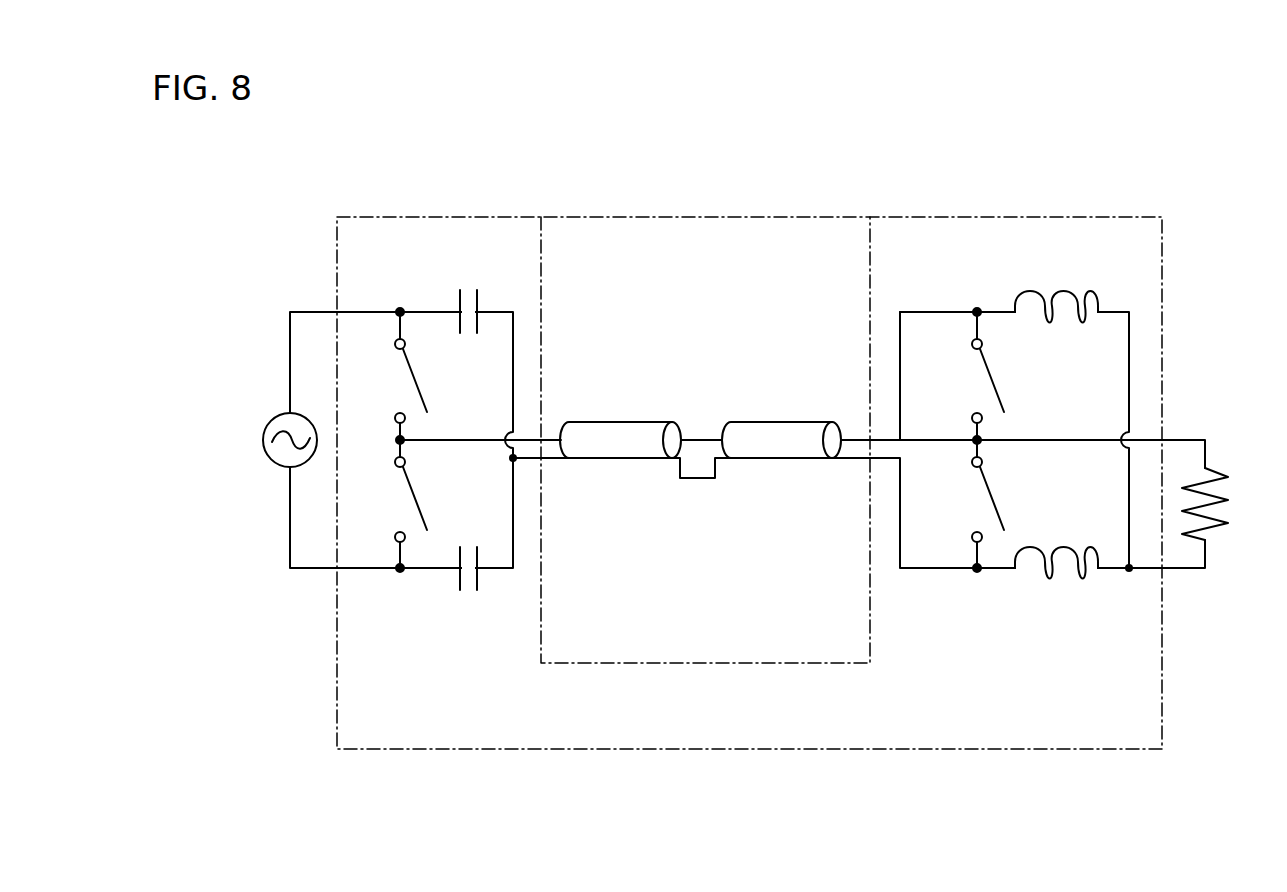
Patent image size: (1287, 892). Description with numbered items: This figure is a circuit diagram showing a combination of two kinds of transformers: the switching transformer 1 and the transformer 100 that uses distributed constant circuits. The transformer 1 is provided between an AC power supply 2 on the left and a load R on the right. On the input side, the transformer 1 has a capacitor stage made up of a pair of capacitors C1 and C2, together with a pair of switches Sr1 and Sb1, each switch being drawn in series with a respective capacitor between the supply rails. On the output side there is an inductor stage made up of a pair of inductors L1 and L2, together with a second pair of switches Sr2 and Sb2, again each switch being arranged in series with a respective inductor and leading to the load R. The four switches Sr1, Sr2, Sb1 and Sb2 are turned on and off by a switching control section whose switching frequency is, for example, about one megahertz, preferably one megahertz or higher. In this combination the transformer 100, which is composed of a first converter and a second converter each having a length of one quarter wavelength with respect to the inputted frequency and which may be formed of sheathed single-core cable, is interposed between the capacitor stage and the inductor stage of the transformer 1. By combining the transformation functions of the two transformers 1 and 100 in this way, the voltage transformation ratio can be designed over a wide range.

The transformer 1 is at (720, 749).
The AC power supply 2 is at (273, 418).
The transformer 100 is at (838, 398).
The capacitor C1 is at (469, 298).
The capacitor C2 is at (469, 585).
The inductor L1 is at (1056, 291).
The inductor L2 is at (1056, 583).
The load R is at (1216, 504).
The switch Sr1 is at (426, 374).
The switch Sb1 is at (428, 504).
The switch Sr2 is at (1004, 374).
The switch Sb2 is at (1005, 504).